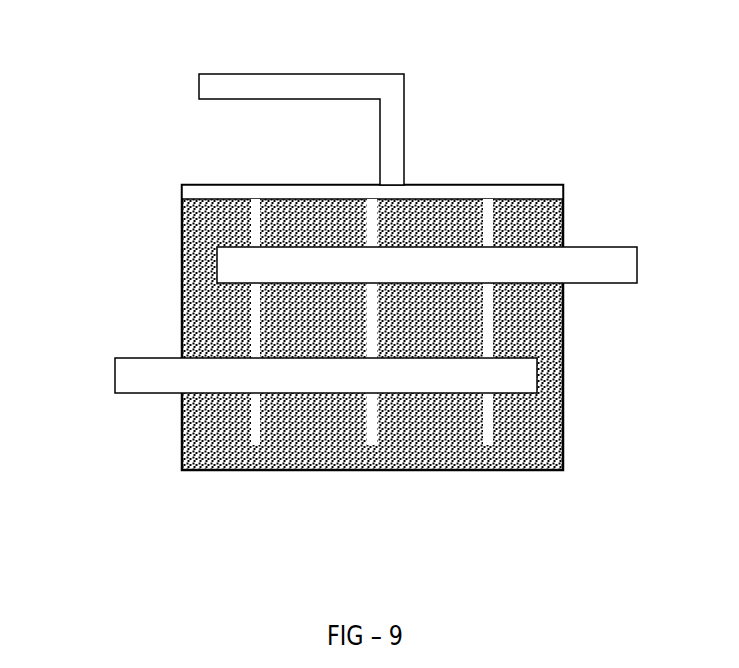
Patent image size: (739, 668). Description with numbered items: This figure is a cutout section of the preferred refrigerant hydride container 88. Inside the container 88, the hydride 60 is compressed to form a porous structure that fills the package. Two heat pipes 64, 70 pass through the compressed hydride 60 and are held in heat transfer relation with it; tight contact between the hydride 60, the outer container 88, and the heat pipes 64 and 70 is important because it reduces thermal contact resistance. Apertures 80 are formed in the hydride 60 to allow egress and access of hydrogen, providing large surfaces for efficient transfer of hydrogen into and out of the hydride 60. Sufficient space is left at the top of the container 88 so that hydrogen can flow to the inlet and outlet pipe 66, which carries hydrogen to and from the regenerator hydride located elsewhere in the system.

The hydride 60 is at (548, 433).
The heat pipe 64 is at (592, 262).
The inlet and outlet pipe 66 is at (349, 80).
The heat pipe 70 is at (152, 380).
The apertures 80 is at (488, 212).
The refrigerant hydride container 88 is at (188, 172).